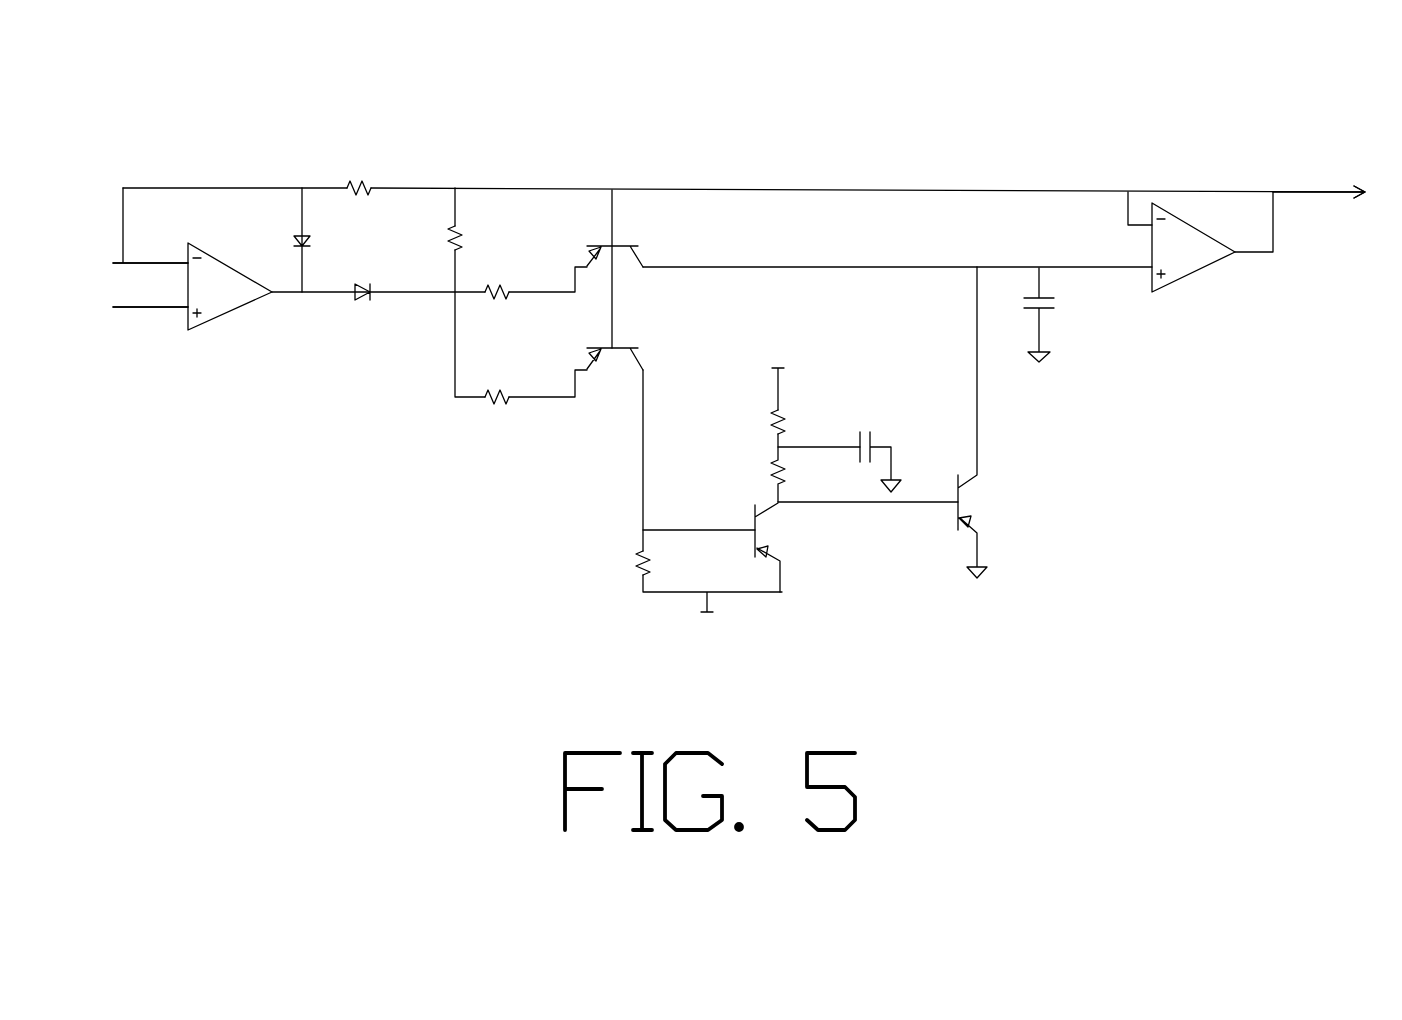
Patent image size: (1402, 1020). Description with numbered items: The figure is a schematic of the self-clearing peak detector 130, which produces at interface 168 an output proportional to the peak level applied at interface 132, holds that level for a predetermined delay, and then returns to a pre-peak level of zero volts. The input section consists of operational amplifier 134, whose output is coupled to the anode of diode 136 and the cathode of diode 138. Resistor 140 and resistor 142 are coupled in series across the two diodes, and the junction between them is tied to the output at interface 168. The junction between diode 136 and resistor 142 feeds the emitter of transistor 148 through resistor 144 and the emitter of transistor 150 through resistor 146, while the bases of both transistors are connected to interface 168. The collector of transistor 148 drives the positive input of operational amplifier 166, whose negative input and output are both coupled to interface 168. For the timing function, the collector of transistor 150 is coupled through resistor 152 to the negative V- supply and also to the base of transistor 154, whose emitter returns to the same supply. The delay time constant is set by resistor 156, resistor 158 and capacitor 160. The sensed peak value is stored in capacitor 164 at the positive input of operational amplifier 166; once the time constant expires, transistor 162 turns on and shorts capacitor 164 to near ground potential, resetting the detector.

The self-clearing peak detector 130 is at (356, 78).
The interface 132 is at (167, 310).
The operational amplifier 134 is at (218, 316).
The diode 136 is at (356, 297).
The diode 138 is at (300, 234).
The resistor 140 is at (363, 196).
The resistor 142 is at (462, 232).
The resistor 144 is at (503, 299).
The resistor 146 is at (503, 404).
The transistor 148 is at (625, 240).
The transistor 150 is at (625, 338).
The resistor 152 is at (635, 560).
The transistor 154 is at (777, 543).
The resistor 156 is at (770, 470).
The resistor 158 is at (770, 420).
The capacitor 160 is at (868, 431).
The transistor 162 is at (970, 510).
The capacitor 164 is at (1055, 307).
The operational amplifier 166 is at (1180, 277).
The interface 168 is at (1343, 197).